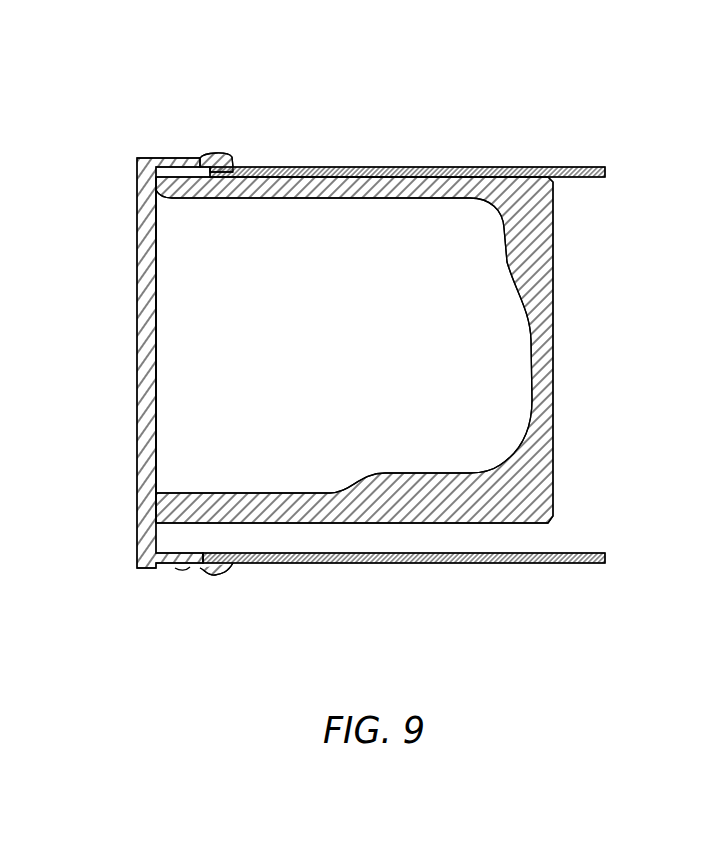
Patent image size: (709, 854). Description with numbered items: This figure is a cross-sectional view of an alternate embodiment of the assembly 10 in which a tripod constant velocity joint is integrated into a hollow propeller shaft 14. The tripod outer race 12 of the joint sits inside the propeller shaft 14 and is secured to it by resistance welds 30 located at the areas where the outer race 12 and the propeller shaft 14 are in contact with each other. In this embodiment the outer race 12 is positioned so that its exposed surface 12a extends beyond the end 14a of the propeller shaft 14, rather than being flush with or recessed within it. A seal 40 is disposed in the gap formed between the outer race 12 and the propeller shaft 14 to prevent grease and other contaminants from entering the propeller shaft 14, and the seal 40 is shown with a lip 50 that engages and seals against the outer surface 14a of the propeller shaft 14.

The cutaway of tripod constant velocity joint integrated into a rotating shaft 10 is at (379, 87).
The tripod outer race 12 is at (426, 199).
The exposed surface 12a is at (152, 443).
The propeller shaft 14 is at (482, 562).
The end of propeller shaft 14a is at (184, 568).
The resistance welds 30 is at (206, 163).
The seal 40 is at (180, 157).
The lip 50 is at (218, 575).